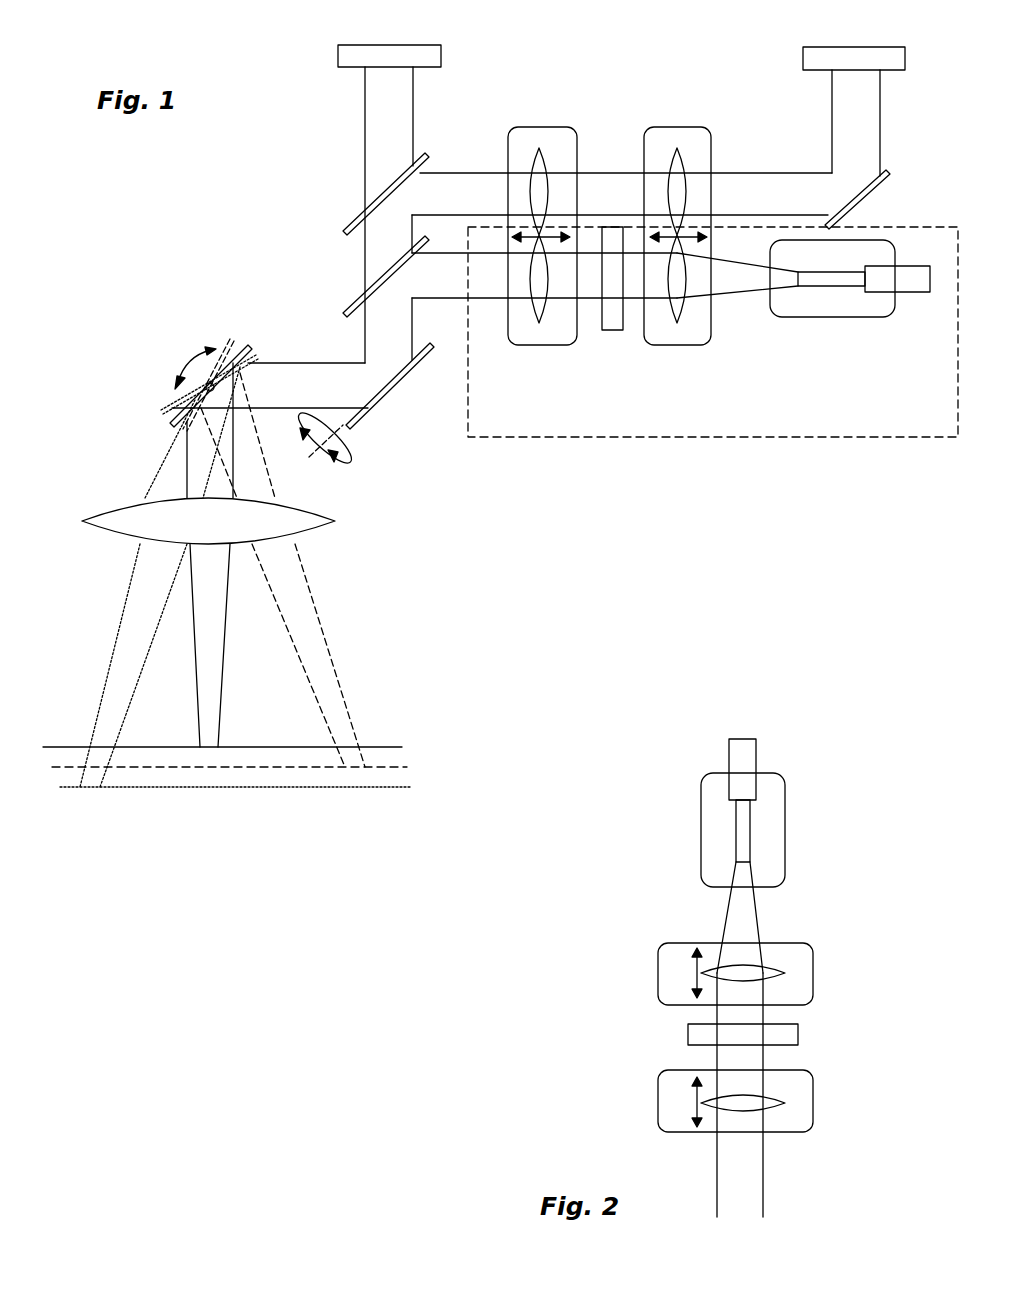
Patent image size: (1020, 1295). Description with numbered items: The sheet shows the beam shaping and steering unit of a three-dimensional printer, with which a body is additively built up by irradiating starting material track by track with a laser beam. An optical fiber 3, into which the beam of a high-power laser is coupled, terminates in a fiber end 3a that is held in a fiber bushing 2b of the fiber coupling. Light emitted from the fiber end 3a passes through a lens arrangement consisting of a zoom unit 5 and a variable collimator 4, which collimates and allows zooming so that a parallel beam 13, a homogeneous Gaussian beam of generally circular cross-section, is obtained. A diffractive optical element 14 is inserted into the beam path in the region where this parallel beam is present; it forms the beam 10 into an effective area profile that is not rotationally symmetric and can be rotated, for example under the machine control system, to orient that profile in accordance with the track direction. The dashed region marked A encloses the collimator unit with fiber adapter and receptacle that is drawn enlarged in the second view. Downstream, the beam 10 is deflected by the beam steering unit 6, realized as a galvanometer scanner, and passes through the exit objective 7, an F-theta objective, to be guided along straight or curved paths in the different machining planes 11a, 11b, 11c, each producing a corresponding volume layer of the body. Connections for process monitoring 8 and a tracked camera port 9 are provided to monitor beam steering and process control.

In FIG. 1, the fiber bushing 2b is at (793, 305).
In FIG. 2, the fiber bushing 2b is at (767, 864).
In FIG. 1, the optical fiber 3 is at (918, 296).
In FIG. 2, the optical fiber 3 is at (742, 757).
In FIG. 1, the fiber end 3a is at (848, 300).
In FIG. 2, the fiber end 3a is at (742, 822).
In FIG. 1, the variable collimator 4 is at (538, 320).
In FIG. 2, the variable collimator 4 is at (785, 1103).
In FIG. 1, the zoom unit 5 is at (677, 320).
In FIG. 2, the zoom unit 5 is at (785, 975).
In FIG. 1, the beam steering unit 6 is at (252, 346).
In FIG. 1, the exit objective 7 is at (303, 520).
In FIG. 1, the connections for process monitoring 8 is at (357, 52).
In FIG. 1, the tracked camera port 9 is at (817, 55).
In FIG. 1, the beam 10 is at (312, 623).
In FIG. 1, the machining plane 11a is at (402, 747).
In FIG. 1, the machining plane 11b is at (407, 765).
In FIG. 1, the machining plane 11c is at (410, 787).
In FIG. 1, the parallel beam 13 is at (670, 135).
In FIG. 2, the parallel beam 13 is at (672, 980).
In FIG. 1, the diffractive optical element 14 is at (612, 317).
In FIG. 2, the diffractive optical element 14 is at (783, 1035).
In FIG. 1, the detail A is at (713, 357).